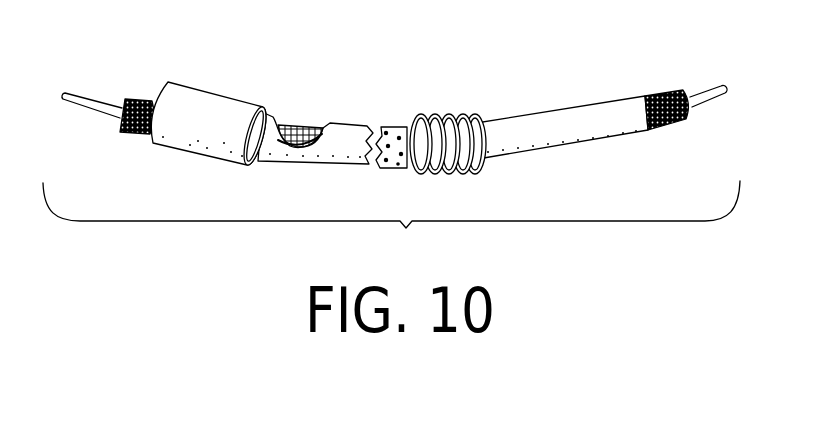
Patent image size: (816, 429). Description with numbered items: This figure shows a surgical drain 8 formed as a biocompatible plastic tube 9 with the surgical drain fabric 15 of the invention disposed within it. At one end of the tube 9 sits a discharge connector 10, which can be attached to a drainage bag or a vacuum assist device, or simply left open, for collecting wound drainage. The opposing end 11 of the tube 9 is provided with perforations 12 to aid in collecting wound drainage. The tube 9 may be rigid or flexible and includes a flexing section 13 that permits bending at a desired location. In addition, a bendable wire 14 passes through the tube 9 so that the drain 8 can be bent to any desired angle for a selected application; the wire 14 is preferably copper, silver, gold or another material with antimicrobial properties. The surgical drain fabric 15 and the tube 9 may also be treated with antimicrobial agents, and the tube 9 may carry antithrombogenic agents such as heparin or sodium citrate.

The surgical drain 8 is at (391, 222).
The tube 9 is at (297, 163).
The discharge connector 10 is at (222, 92).
The opposing end 11 is at (397, 168).
The perforations 12 is at (390, 130).
The flexing section 13 is at (473, 113).
The bendable wire 14 is at (83, 90).
The surgical drain fabric 15 is at (139, 97).